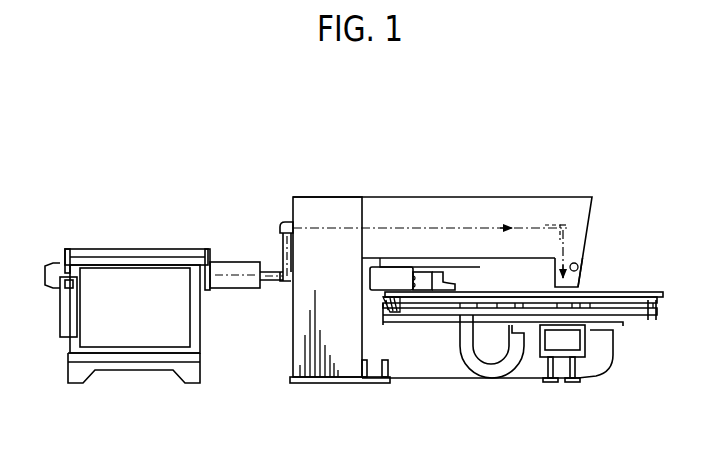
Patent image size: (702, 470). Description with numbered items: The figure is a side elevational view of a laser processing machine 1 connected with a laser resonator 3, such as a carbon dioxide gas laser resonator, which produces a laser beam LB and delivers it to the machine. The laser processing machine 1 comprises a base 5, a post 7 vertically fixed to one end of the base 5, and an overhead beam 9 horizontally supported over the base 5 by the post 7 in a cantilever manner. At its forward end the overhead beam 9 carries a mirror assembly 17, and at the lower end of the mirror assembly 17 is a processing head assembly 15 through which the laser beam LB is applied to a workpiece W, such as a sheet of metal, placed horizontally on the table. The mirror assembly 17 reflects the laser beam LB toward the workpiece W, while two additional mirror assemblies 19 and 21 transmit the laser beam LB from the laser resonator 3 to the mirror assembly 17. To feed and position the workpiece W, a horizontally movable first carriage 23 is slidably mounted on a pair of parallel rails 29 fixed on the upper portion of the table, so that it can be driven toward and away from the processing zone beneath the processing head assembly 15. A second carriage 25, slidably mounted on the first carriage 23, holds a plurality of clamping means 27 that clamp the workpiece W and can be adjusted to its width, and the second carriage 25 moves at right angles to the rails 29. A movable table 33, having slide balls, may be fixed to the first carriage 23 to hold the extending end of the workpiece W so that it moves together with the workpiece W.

The laser processing machine 1 is at (302, 187).
The laser resonator 3 is at (137, 247).
The base 5 is at (432, 373).
The post 7 is at (295, 340).
The overhead beam 9 is at (377, 207).
The processing head assembly 15 is at (587, 262).
The mirror assembly 17 is at (565, 222).
The mirror assembly 19 is at (285, 225).
The mirror assembly 21 is at (280, 293).
The first carriage 23 is at (415, 303).
The second carriage 25 is at (422, 272).
The clamping means 27 is at (435, 272).
The rails 29 is at (530, 308).
The movable table 33 is at (442, 297).
The laser beam LB is at (497, 225).
The workpiece W is at (587, 290).